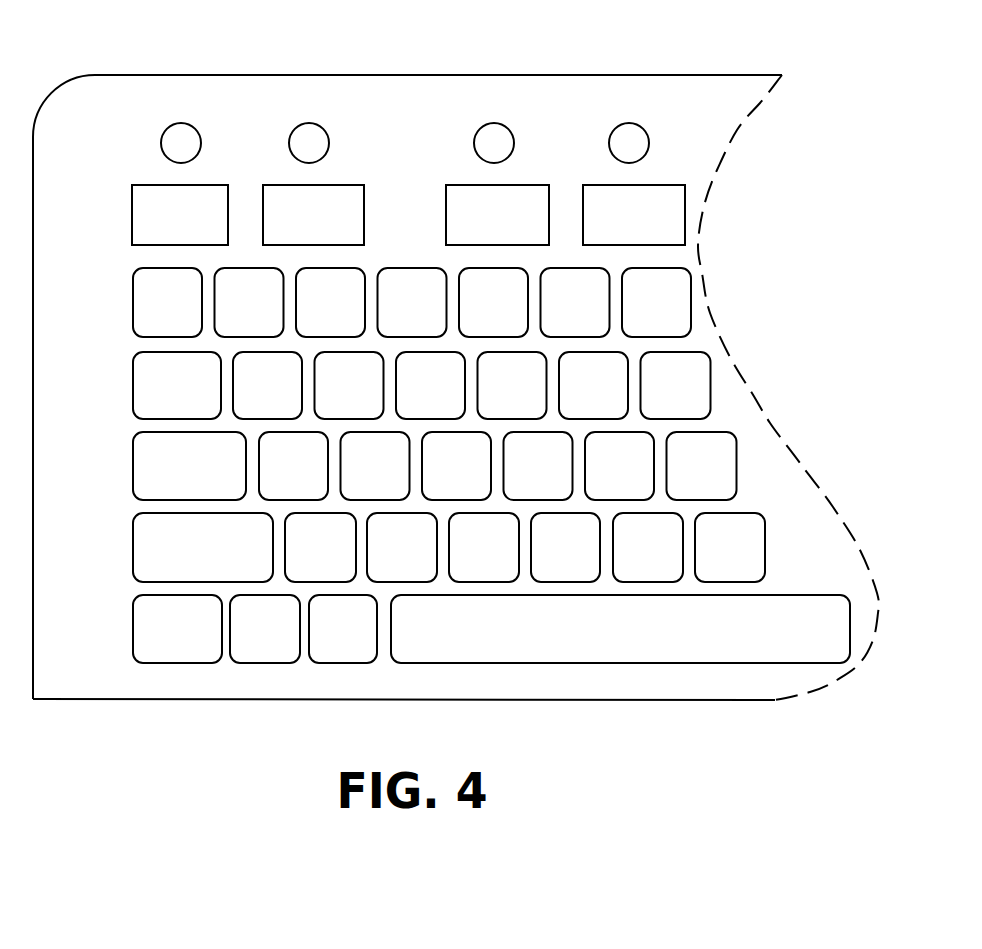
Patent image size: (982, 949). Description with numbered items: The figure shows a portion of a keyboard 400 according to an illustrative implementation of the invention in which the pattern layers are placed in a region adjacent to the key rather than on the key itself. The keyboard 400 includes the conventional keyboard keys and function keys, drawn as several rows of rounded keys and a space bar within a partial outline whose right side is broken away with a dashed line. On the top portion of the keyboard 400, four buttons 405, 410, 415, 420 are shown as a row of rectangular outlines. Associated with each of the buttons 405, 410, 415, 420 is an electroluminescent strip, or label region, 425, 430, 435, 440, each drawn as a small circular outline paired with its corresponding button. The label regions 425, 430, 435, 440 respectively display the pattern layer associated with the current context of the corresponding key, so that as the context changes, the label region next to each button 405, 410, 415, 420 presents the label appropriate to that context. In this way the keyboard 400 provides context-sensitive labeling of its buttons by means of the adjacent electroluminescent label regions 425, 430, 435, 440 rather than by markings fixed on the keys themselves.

The keyboard 400 is at (757, 317).
The button 405 is at (140, 184).
The button 410 is at (277, 184).
The button 415 is at (455, 184).
The button 420 is at (589, 184).
The electroluminescent strip (label region) 425 is at (182, 123).
The electroluminescent strip (label region) 430 is at (317, 123).
The electroluminescent strip (label region) 435 is at (495, 123).
The electroluminescent strip (label region) 440 is at (631, 123).